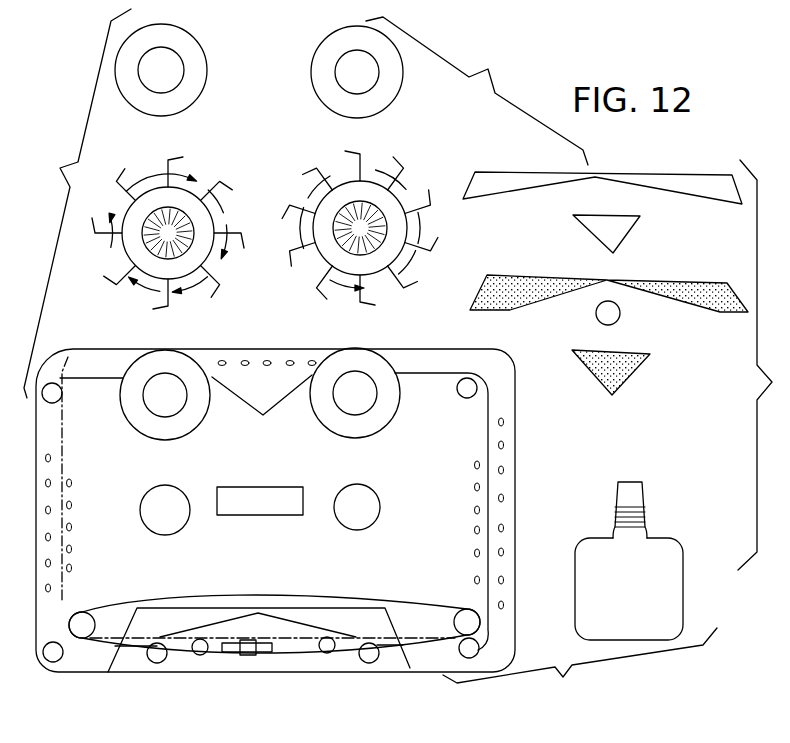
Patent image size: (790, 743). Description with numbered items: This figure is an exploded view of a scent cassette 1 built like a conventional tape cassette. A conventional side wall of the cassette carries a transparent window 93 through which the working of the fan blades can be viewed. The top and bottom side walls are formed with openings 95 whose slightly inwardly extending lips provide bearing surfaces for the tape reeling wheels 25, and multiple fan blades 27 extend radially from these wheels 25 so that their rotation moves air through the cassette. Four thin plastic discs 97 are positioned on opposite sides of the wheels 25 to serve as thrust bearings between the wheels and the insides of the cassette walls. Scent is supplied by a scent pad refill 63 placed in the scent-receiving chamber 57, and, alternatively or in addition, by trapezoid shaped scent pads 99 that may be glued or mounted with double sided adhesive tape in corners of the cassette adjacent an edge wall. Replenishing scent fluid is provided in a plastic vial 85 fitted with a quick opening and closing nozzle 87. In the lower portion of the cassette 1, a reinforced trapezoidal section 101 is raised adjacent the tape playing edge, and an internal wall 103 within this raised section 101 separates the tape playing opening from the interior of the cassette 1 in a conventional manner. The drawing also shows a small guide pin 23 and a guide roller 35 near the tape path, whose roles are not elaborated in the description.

The scent cassette 1 is at (530, 549).
The guide pin 23 is at (620, 313).
The tape reeling wheels 25 is at (372, 192).
The fan blades 27 is at (305, 273).
The guide roller 35 is at (84, 612).
The scent-receiving chamber 57 is at (296, 396).
The scent pad refill 63 is at (640, 370).
The plastic vial 85 is at (685, 550).
The quick opening and closing nozzle 87 is at (645, 495).
The transparent window 93 is at (248, 494).
The openings 95 is at (369, 489).
The thin plastic discs 97 is at (205, 97).
The trapezoid shaped scent pads 99 is at (567, 295).
The reinforced trapezoidal section 101 is at (380, 597).
The internal wall 103 is at (282, 620).